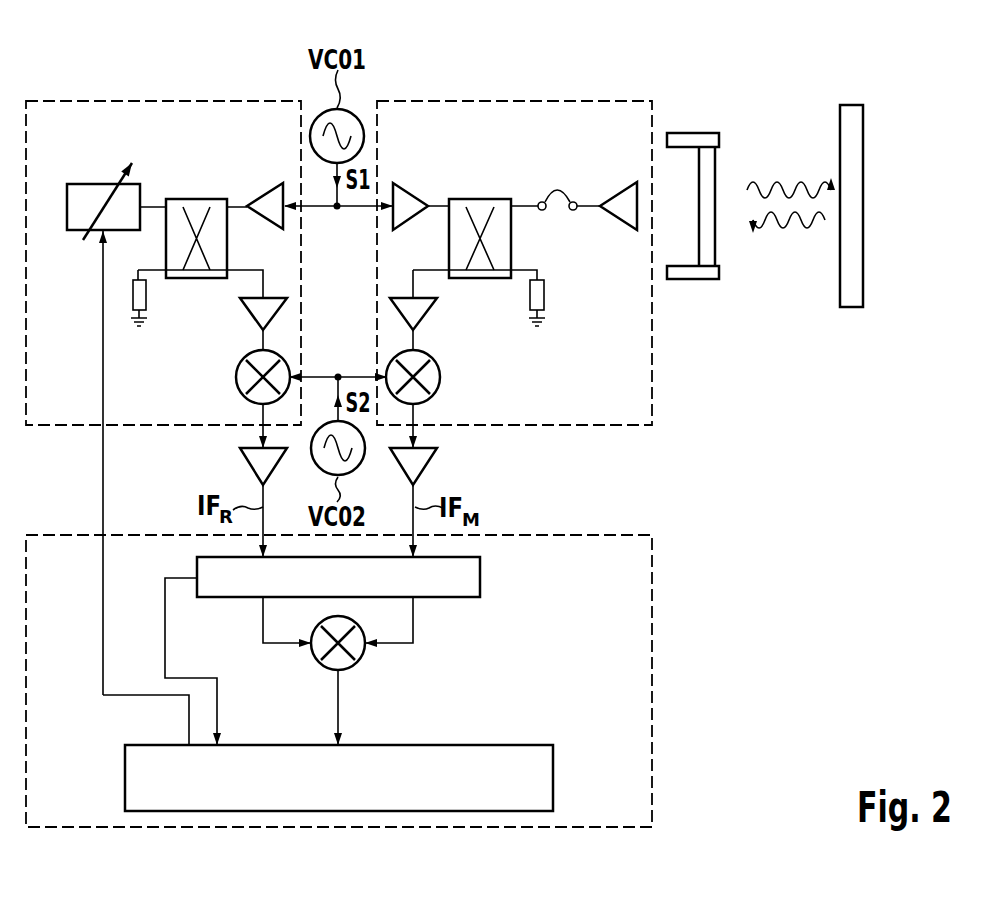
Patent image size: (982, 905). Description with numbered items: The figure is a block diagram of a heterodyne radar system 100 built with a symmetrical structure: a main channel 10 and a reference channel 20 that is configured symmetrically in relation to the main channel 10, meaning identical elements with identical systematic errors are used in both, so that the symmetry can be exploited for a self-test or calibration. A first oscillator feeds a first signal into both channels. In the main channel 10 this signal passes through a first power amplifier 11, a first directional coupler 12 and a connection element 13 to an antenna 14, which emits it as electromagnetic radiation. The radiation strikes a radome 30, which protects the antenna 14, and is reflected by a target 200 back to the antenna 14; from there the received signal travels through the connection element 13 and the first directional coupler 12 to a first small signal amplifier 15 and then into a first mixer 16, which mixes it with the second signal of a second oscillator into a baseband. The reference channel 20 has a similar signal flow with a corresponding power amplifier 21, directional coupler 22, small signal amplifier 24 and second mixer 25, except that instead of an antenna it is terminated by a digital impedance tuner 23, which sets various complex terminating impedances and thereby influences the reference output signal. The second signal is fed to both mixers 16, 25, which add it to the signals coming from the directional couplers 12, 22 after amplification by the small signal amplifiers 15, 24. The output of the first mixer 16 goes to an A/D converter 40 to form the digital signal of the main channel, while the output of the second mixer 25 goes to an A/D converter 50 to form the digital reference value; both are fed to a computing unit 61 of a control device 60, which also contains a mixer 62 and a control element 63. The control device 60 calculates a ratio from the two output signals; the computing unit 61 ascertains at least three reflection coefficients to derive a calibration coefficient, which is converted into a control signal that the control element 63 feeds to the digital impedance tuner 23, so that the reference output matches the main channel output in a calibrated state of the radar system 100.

The main channel 10 is at (513, 100).
The first power amplifier 11 is at (411, 183).
The first directional coupler 12 is at (478, 198).
The connection element 13 is at (558, 190).
The antenna 14 is at (618, 183).
The first small signal amplifier 15 is at (428, 317).
The first mixer 16 is at (443, 377).
The reference channel 20 is at (162, 100).
The power amplifier of reference channel 21 is at (263, 183).
The directional coupler 22 is at (195, 198).
The digital impedance tuner 23 is at (102, 183).
The small signal amplifier 24 is at (248, 317).
The second mixer 25 is at (237, 377).
The radome 30 is at (705, 133).
The A/D converter 40 is at (428, 468).
The A/D converter 50 is at (248, 468).
The control device 60 is at (527, 532).
The computing unit 61 is at (480, 577).
The evaluation mixer 62 is at (358, 662).
The control element 63 is at (553, 780).
The radar system 100 is at (788, 635).
The target 200 is at (852, 105).